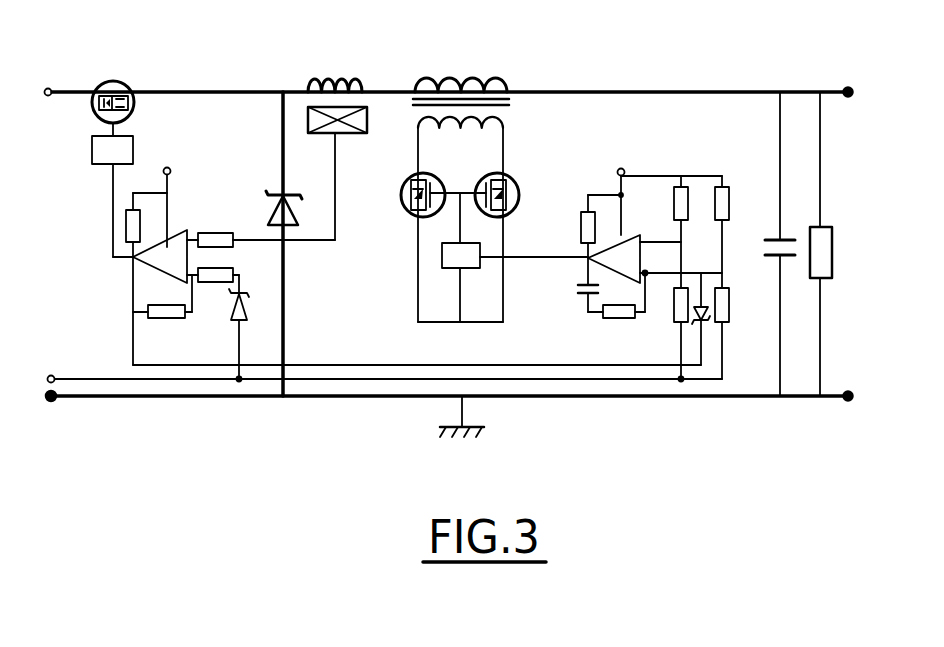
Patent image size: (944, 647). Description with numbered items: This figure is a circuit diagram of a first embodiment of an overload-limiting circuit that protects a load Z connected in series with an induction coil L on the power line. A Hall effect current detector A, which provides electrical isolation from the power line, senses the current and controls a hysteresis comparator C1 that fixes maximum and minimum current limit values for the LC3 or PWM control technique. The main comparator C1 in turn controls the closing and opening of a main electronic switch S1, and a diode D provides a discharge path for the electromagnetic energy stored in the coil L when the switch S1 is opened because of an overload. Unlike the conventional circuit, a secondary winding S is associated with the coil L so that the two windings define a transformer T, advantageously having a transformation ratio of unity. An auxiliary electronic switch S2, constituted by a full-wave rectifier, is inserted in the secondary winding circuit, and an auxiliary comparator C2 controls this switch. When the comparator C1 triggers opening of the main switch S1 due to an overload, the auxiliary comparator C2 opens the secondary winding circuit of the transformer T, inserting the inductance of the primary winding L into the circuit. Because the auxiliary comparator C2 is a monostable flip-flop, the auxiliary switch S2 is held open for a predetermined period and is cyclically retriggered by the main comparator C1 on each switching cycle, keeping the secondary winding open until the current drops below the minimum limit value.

The main electronic switch S1 is at (108, 78).
The Hall effect current detector A is at (341, 73).
The induction coil L is at (436, 82).
The transformer T is at (488, 94).
The secondary winding S is at (504, 130).
The diode D is at (272, 213).
The auxiliary electronic switch S2 is at (407, 216).
The main hysteresis comparator C1 is at (128, 264).
The auxiliary comparator C2 is at (577, 265).
The load Z is at (828, 216).